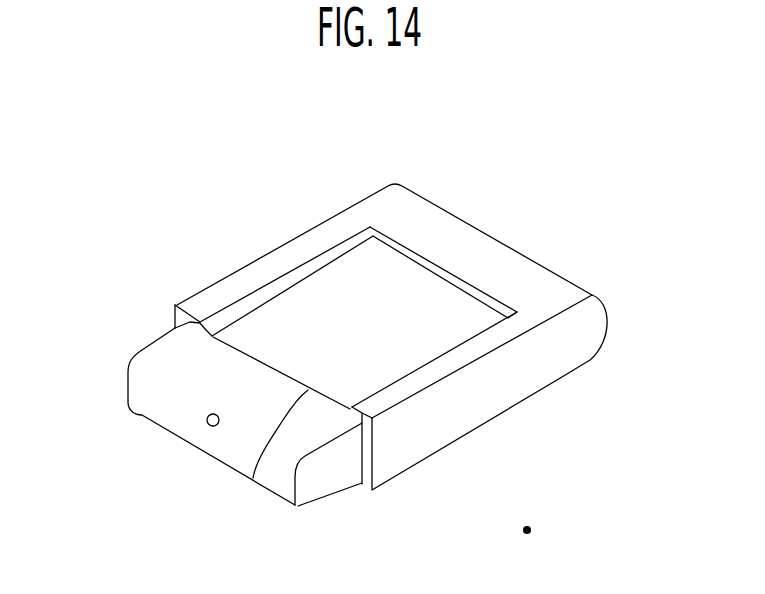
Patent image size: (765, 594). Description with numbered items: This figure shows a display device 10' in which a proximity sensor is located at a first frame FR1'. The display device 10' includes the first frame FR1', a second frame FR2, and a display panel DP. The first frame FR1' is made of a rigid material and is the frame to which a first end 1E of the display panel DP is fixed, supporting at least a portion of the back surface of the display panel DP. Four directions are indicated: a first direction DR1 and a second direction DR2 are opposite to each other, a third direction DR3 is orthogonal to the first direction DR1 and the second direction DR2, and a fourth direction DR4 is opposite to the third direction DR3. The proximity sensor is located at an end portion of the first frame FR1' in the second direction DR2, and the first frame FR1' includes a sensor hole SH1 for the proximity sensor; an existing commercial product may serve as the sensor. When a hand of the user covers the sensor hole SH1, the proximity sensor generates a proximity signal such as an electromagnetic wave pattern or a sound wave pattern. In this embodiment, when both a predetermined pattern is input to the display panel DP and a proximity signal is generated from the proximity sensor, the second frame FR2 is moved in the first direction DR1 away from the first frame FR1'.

The display device 10' is at (392, 281).
The second frame FR2 is at (338, 213).
The display panel DP is at (302, 286).
The first frame FR1' is at (239, 395).
The sensor hole SH1 is at (207, 428).
The first end 1E is at (256, 478).
The first direction DR1 is at (527, 530).
The second direction DR2 is at (527, 530).
The third direction DR3 is at (527, 530).
The fourth direction DR4 is at (527, 530).